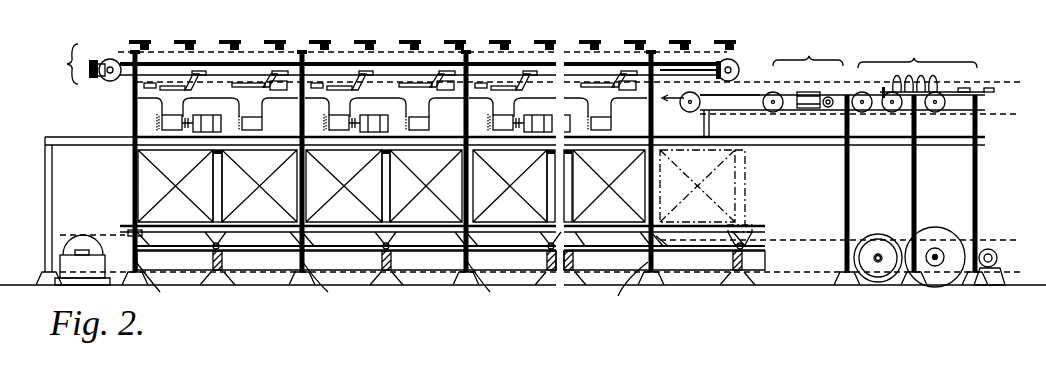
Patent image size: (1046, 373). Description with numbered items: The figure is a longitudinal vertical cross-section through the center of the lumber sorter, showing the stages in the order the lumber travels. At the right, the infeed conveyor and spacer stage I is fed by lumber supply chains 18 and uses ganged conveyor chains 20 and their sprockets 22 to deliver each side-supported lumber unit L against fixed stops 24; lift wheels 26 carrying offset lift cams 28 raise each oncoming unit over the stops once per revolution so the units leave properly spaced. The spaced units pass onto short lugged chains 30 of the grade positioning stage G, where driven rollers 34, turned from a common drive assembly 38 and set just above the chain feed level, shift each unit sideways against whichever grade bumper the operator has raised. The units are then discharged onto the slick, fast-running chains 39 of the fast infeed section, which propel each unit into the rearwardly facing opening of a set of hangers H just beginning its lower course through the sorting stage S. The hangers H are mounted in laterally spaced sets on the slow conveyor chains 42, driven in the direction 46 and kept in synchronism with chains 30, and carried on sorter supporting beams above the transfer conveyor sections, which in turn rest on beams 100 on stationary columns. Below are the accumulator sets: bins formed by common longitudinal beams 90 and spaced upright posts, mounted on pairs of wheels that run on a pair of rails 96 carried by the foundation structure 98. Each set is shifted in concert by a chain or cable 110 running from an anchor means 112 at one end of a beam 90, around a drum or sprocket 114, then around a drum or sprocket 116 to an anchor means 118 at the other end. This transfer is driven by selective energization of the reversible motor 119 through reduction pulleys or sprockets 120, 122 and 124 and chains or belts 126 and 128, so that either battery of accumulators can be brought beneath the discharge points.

The hanger element H is at (277, 40).
The conveyor chains 42 is at (412, 80).
The sorting stage S is at (66, 64).
The grade positioning stage G is at (808, 52).
The infeed conveyor and spacer stage I is at (917, 51).
The common drive assembly 38 is at (828, 96).
The fixed stops 24 is at (885, 86).
The lumber unit L is at (945, 75).
The ganged conveyor chains 20 is at (948, 92).
The lumber supply conveyor chains 18 is at (1000, 92).
The direction of drive 46 is at (688, 110).
The slick conveyor chains 39 is at (748, 111).
The lugged conveyor chains 30 is at (777, 111).
The driven rollers 34 is at (814, 109).
The lift wheels 26 is at (864, 112).
The lift cam 28 is at (893, 112).
The sprockets 22 is at (939, 112).
The beams 100 is at (133, 137).
The longitudinal beams 90 is at (133, 226).
The drum or sprocket 116 is at (82, 249).
The anchor means 118 is at (128, 234).
The rails 96 is at (160, 249).
The foundation structure 98 is at (178, 264).
The chain or cable 110 is at (800, 240).
The anchor means 112 is at (660, 244).
The chain or belt 128 is at (897, 234).
The drum or sprocket 114 is at (870, 266).
The reduction pulley or sprocket 124 is at (886, 282).
The reduction pulley or sprocket 122 is at (935, 268).
The reduction pulley or sprocket 120 is at (948, 272).
The chain or belt 126 is at (987, 250).
The reversible motor 119 is at (997, 256).